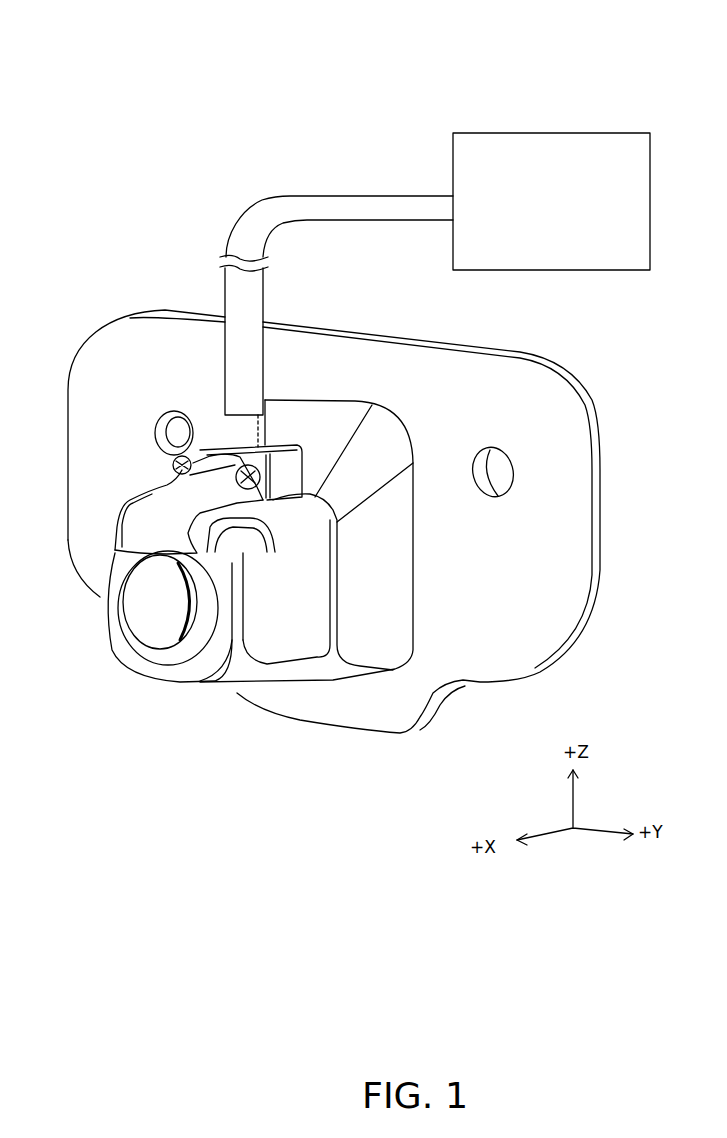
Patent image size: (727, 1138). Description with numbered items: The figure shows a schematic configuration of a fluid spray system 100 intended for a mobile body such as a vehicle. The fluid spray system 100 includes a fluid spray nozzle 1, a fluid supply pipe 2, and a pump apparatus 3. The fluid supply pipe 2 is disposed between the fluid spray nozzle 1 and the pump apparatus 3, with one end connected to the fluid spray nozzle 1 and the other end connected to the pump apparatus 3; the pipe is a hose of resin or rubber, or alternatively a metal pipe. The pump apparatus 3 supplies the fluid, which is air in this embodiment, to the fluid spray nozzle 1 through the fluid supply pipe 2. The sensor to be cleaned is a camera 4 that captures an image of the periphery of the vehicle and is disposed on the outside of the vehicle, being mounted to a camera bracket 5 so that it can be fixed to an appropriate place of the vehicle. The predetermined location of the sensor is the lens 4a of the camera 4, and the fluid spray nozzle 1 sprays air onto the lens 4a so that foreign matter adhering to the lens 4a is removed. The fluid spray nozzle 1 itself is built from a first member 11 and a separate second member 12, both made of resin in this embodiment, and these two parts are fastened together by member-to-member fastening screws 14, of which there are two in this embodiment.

The fluid spray system 100 is at (200, 107).
The fluid spray nozzle 1 is at (132, 472).
The fluid supply pipe 2 is at (250, 208).
The pump apparatus 3 is at (582, 133).
The camera 4 is at (223, 673).
The lens 4a is at (138, 610).
The camera bracket 5 is at (555, 402).
The first member 11 is at (285, 477).
The second member 12 is at (142, 520).
The member-to-member fastening screws 14 is at (247, 466).